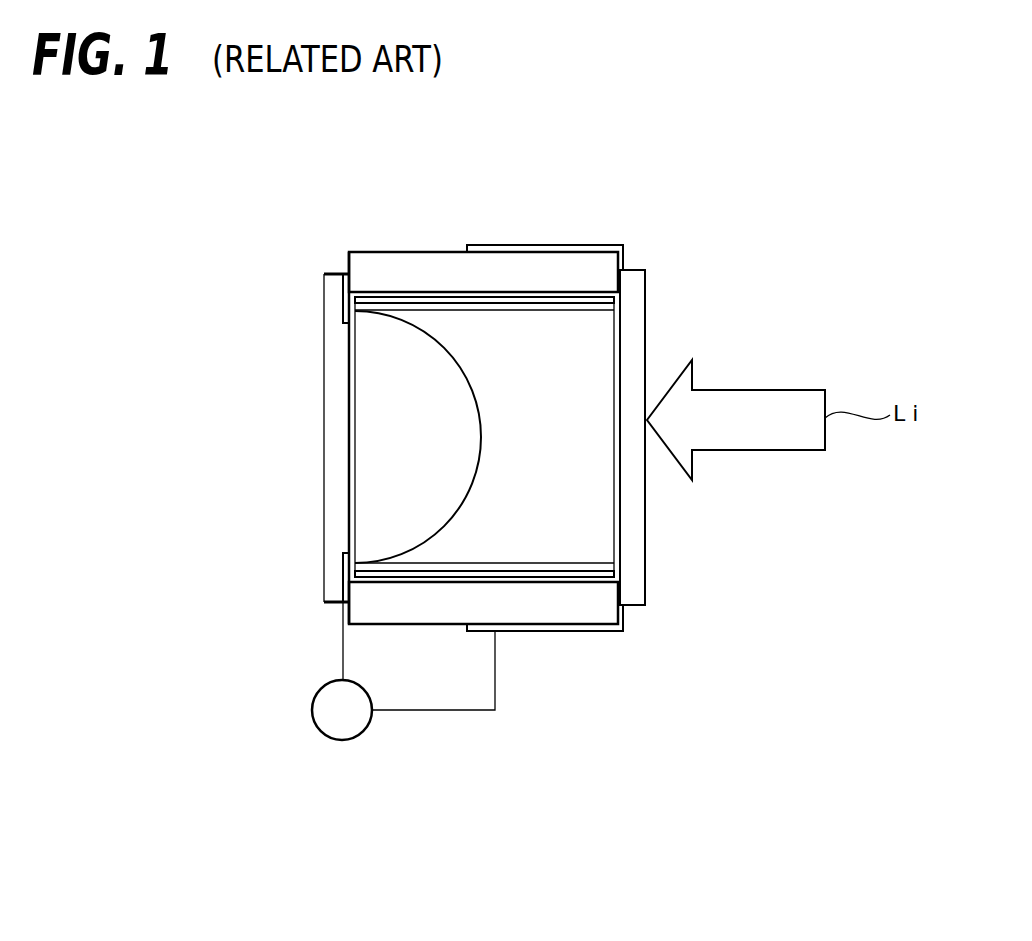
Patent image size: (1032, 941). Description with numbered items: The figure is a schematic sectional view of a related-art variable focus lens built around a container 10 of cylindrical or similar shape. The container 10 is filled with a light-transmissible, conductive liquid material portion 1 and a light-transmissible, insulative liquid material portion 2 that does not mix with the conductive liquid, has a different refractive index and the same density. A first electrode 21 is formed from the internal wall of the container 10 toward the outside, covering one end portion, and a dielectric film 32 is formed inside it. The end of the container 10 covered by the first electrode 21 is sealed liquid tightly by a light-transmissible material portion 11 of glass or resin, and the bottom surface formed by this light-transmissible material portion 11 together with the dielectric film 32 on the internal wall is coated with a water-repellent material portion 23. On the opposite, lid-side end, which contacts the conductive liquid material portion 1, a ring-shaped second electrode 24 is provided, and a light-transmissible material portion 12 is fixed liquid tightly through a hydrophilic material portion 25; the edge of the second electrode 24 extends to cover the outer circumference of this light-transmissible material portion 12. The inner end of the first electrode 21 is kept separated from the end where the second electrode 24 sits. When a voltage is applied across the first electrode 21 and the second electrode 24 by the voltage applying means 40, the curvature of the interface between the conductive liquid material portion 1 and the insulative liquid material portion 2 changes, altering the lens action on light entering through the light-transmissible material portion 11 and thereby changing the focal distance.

The conductive liquid material portion 1 is at (378, 350).
The insulative liquid material portion 2 is at (600, 515).
The container 10 is at (390, 262).
The light-transmissible material portion 11 is at (632, 540).
The light-transmissible material portion 12 is at (330, 522).
The first electrode 21 is at (575, 245).
The water-repellent material portion 23 is at (632, 342).
The second electrode 24 is at (335, 273).
The hydrophilic material portion 25 is at (348, 408).
The dielectric film 32 is at (616, 301).
The voltmeter 40 is at (342, 740).